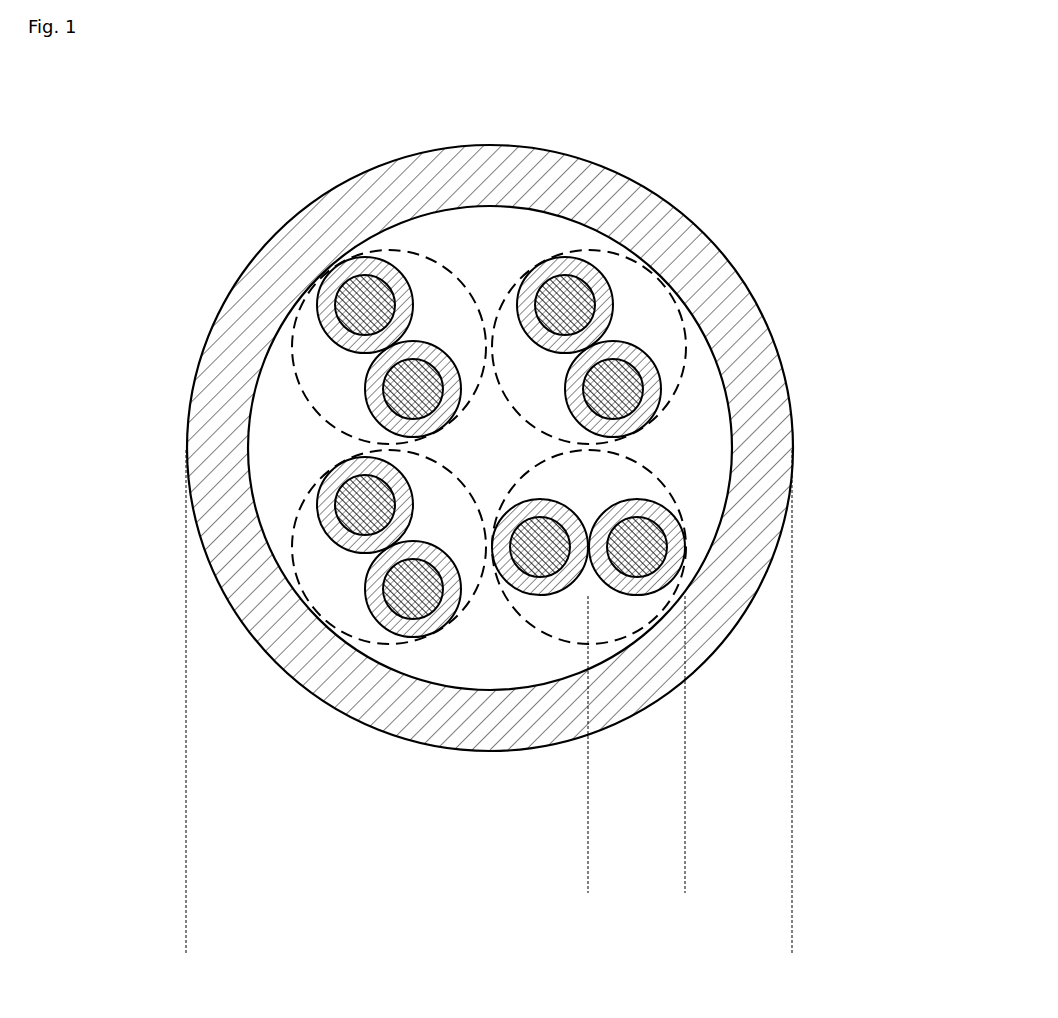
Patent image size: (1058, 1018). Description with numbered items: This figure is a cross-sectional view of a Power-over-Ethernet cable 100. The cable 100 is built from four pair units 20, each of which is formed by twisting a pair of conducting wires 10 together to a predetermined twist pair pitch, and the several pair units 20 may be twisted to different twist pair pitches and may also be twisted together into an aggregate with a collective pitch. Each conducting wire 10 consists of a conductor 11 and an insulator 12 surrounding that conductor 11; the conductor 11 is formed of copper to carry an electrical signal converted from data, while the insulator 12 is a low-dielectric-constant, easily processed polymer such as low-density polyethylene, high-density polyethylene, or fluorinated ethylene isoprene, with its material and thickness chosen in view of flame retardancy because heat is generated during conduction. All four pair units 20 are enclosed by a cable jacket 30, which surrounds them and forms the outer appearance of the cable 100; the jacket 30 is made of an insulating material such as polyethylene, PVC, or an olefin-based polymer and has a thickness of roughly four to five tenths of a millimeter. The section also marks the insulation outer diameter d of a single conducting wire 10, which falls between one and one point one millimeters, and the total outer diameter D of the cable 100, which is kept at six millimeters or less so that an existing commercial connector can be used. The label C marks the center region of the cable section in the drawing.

The Power-over-Ethernet (PoE) cable 100 is at (163, 117).
The cable jacket 30 is at (247, 330).
The conducting wire 10 is at (348, 374).
The conductor 11 is at (587, 278).
The insulator 12 is at (635, 357).
The pair unit 20 is at (676, 458).
The center of cable C is at (500, 258).
The total outer diameter D is at (791, 945).
The insulation outer diameter d is at (684, 883).